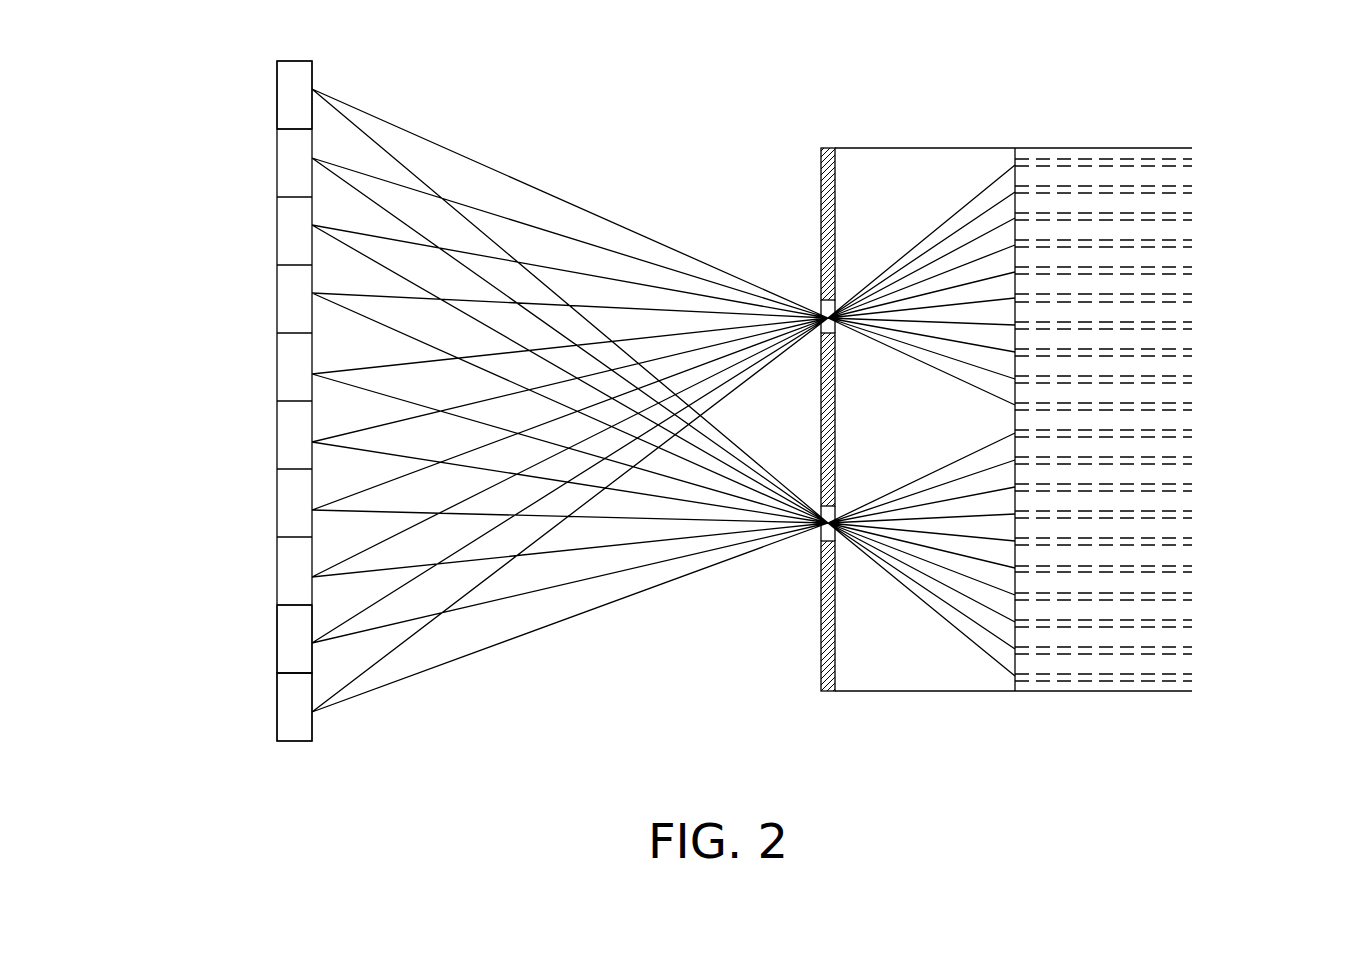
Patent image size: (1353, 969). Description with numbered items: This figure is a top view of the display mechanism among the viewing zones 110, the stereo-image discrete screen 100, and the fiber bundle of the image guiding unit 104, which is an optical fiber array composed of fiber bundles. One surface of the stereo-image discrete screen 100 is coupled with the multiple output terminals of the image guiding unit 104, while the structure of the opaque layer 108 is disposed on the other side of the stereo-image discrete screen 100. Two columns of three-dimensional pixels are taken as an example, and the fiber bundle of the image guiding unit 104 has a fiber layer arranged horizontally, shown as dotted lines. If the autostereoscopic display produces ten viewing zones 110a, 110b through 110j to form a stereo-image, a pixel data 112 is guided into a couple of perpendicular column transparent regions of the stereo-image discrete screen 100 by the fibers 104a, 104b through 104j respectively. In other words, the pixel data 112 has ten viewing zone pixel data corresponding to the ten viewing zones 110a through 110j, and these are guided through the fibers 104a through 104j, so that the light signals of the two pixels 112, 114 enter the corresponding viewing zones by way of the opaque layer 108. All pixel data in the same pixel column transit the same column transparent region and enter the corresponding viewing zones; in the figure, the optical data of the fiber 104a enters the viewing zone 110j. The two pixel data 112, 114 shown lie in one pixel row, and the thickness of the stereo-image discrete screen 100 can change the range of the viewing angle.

The stereo-image discrete screen 100 is at (891, 680).
The image guiding unit 104 is at (1101, 694).
The fiber 104a is at (1192, 679).
The fiber 104b is at (1192, 653).
The fiber 104j is at (1192, 436).
The opaque layer 108 is at (831, 691).
The viewing zones 110 is at (166, 74).
The viewing zone 110a is at (285, 707).
The viewing zone 110b is at (285, 642).
The viewing zone 110j is at (288, 98).
The pixel data 112 is at (1293, 433).
The pixel data 114 is at (1203, 165).